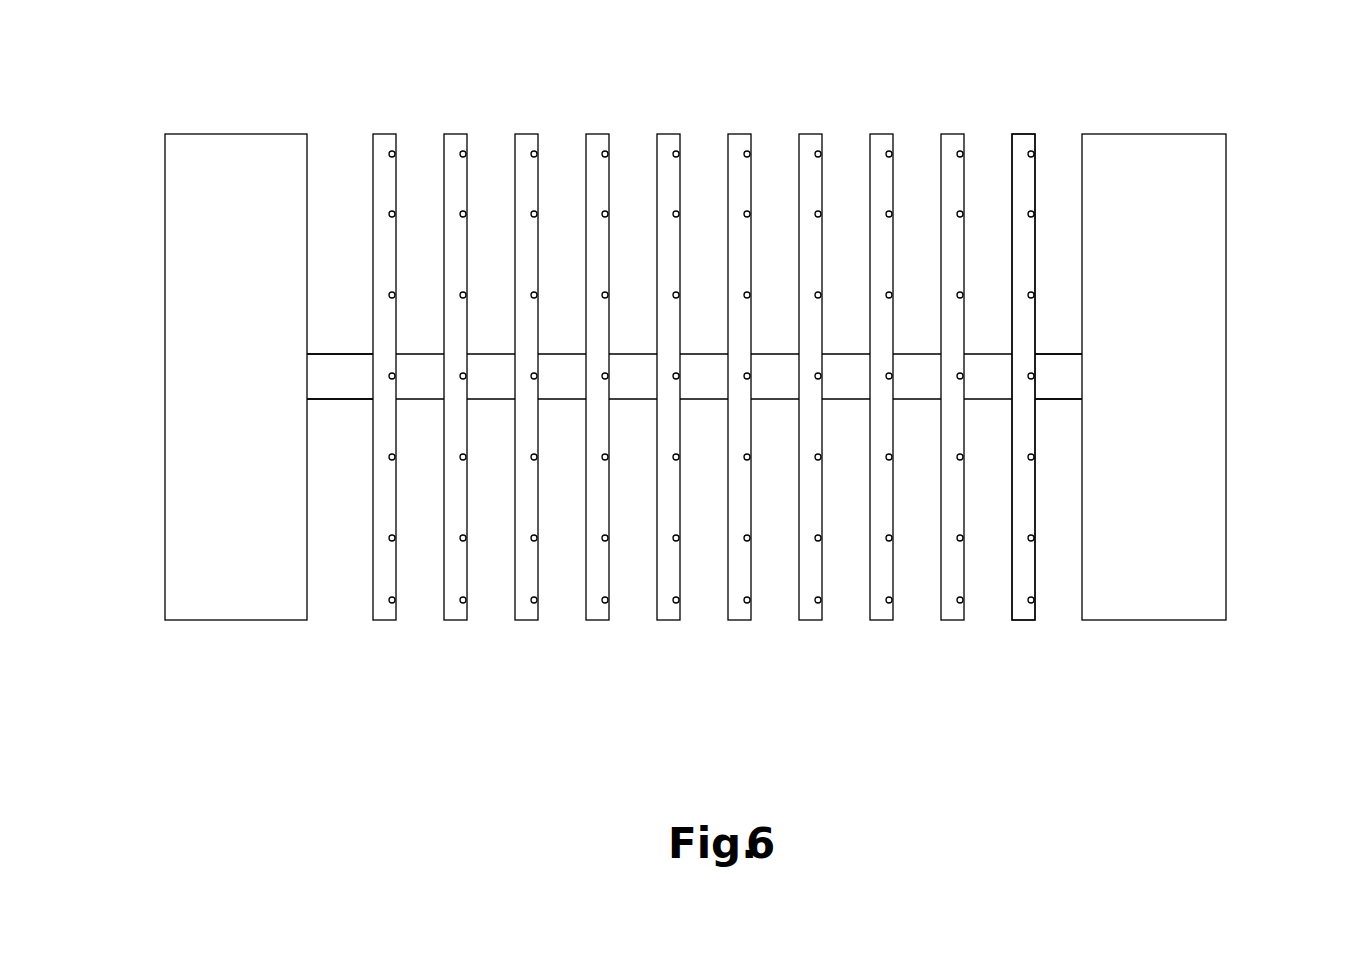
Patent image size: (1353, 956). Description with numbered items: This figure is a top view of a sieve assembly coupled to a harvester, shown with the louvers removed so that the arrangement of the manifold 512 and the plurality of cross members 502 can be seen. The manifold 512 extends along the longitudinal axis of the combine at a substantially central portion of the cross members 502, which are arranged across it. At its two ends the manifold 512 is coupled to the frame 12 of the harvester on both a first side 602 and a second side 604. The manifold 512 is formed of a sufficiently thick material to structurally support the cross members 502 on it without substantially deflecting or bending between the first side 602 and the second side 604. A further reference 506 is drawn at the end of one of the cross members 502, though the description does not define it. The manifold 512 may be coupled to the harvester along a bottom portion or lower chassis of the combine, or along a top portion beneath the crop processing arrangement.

The frame 12 is at (184, 381).
The cross members 502 is at (590, 133).
The fin plate end 506 is at (1029, 641).
The manifold 512 is at (342, 353).
The first side 602 is at (316, 414).
The second side 604 is at (1074, 344).